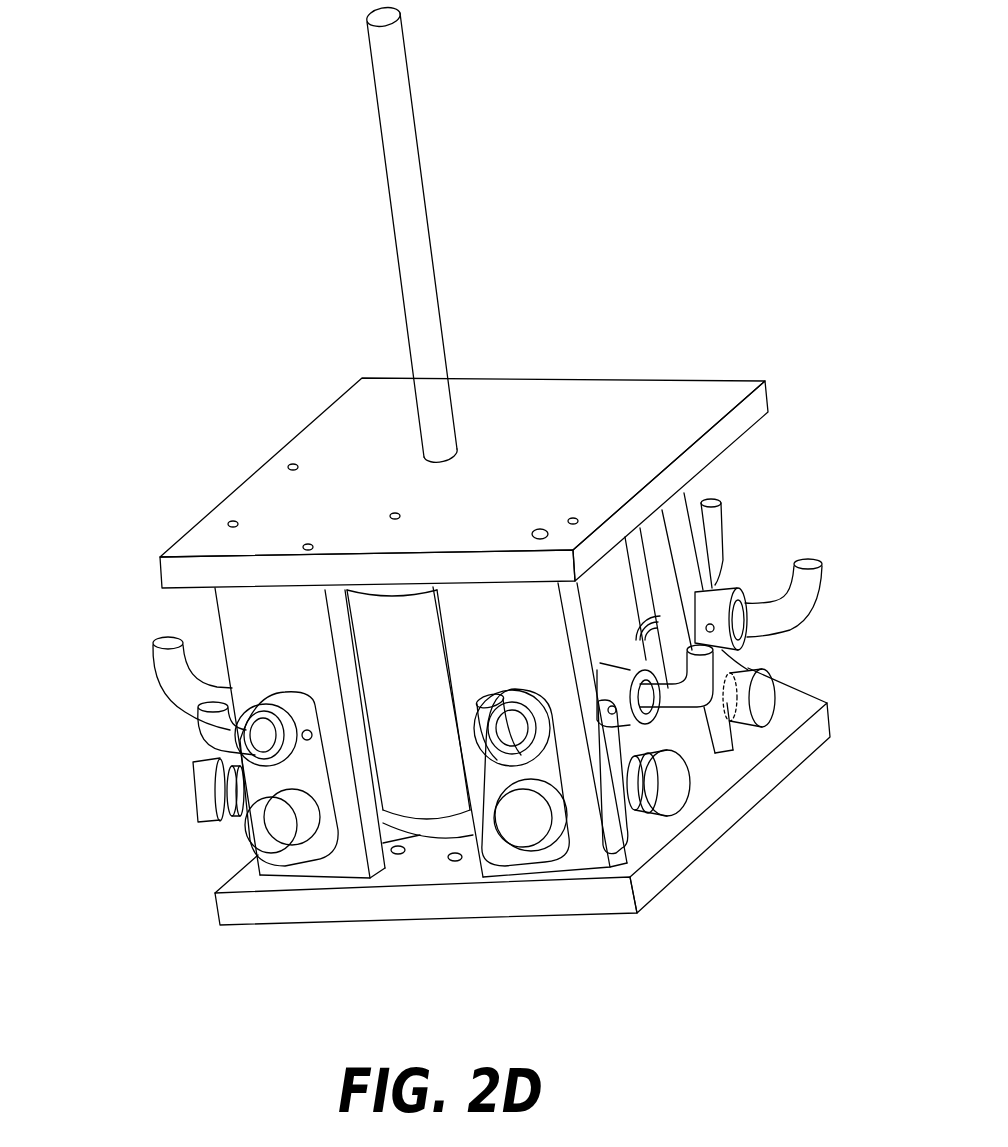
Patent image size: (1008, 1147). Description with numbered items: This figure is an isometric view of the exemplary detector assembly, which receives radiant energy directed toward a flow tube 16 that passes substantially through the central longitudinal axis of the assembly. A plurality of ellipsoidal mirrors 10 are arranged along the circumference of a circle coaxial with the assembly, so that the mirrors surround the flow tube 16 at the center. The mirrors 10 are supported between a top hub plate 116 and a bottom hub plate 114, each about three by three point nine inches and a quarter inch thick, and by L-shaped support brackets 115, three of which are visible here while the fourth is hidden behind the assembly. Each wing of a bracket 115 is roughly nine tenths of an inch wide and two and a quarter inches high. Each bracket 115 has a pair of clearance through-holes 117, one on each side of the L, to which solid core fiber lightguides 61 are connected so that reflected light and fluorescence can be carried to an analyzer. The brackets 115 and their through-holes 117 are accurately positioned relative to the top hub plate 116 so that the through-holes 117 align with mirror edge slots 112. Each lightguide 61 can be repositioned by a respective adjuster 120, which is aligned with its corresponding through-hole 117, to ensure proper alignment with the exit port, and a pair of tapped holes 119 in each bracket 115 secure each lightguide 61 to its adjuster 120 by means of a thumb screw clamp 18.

The ellipsoidal mirror 10 is at (412, 660).
The flow tube 16 is at (430, 225).
The thumb screw clamp 18 is at (683, 785).
The lightguide 61 is at (158, 685).
The mirror edge slot 112 is at (700, 717).
The bottom hub plate 114 is at (247, 905).
The L-shaped support bracket 115 is at (298, 637).
The top hub plate 116 is at (521, 537).
The clearance through-hole 117 is at (297, 715).
The tapped hole 119 is at (763, 677).
The adjuster 120 is at (337, 810).